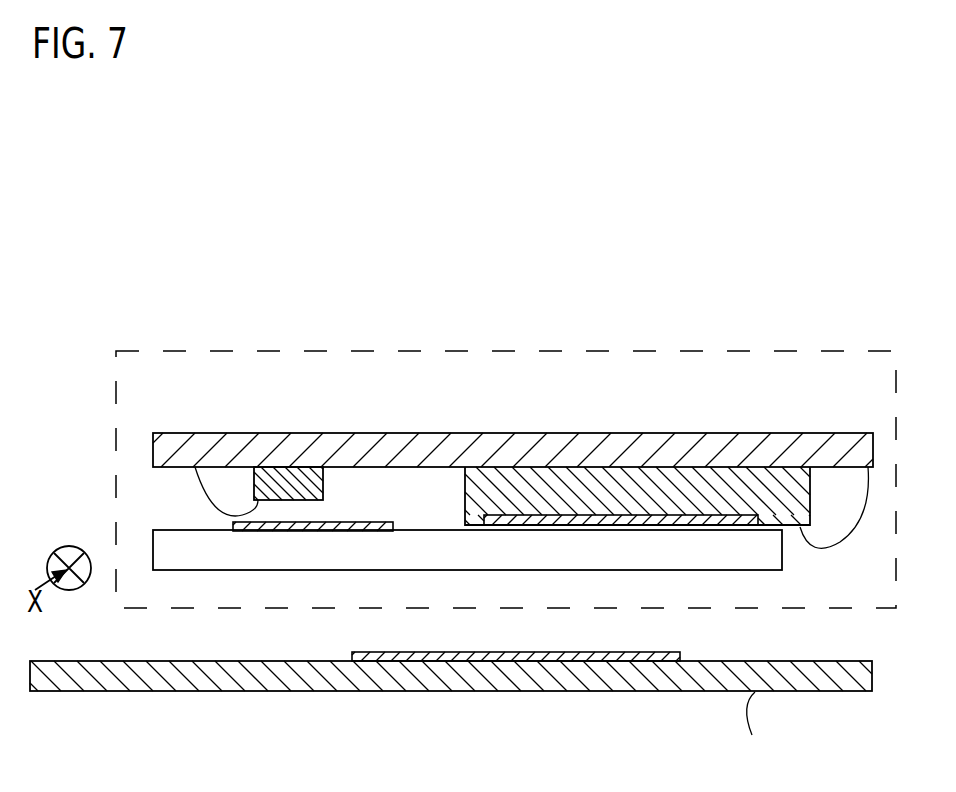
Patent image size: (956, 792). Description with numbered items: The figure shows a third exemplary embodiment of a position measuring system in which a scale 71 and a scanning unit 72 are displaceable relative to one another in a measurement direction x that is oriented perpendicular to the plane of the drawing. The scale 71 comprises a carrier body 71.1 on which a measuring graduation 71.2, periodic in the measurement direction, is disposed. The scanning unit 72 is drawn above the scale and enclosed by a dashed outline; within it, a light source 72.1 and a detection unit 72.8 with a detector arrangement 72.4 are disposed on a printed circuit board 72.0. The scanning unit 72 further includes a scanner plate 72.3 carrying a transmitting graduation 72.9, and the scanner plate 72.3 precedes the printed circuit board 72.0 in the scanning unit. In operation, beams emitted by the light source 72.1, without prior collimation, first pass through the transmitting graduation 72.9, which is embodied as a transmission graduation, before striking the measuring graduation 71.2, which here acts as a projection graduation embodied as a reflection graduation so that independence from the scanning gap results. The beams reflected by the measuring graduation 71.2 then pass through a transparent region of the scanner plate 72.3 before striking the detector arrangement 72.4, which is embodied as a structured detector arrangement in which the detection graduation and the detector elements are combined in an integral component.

The scale 71 is at (71, 696).
The carrier body 71.1 is at (757, 734).
The measuring graduation 71.2 is at (622, 655).
The scanning unit 72 is at (104, 445).
The printed circuit board 72.0 is at (502, 453).
The light source 72.1 is at (303, 485).
The scanner plate 72.3 is at (173, 553).
The detector arrangement 72.4 is at (667, 517).
The detection unit 72.8 is at (772, 490).
The transmitting graduation 72.9 is at (355, 522).